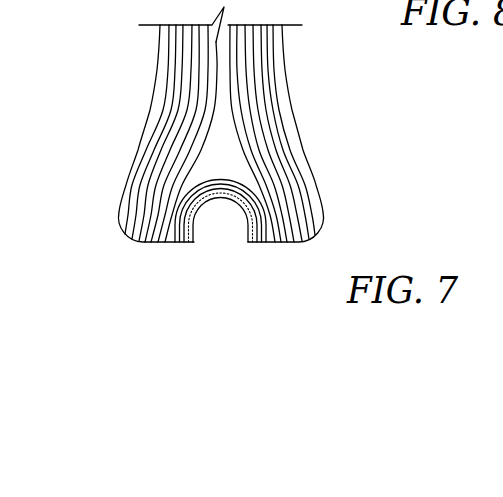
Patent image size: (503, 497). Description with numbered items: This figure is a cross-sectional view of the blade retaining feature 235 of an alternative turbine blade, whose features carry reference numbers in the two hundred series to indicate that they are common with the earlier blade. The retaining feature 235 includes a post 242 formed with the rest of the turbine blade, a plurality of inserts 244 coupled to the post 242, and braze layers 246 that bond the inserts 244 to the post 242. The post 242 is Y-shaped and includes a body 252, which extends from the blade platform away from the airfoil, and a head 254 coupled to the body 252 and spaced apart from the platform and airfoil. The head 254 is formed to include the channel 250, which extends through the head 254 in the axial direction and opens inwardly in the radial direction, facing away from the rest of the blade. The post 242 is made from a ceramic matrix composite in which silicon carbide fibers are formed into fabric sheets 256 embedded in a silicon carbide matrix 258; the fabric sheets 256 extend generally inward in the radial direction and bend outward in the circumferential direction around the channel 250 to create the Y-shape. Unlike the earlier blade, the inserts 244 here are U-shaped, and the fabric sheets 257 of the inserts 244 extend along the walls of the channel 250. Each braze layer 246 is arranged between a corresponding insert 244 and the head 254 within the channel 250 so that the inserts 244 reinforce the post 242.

The blade retaining feature 235 is at (107, 140).
The post 242 is at (134, 99).
The body 252 is at (158, 52).
The head 254 is at (123, 189).
The fabric sheets 256 is at (257, 44).
The silicon carbide matrix 258 is at (286, 120).
The fabric sheets of the inserts 257 is at (199, 208).
The braze layers 246 is at (260, 254).
The inserts 244 is at (236, 217).
The channel 250 is at (200, 268).